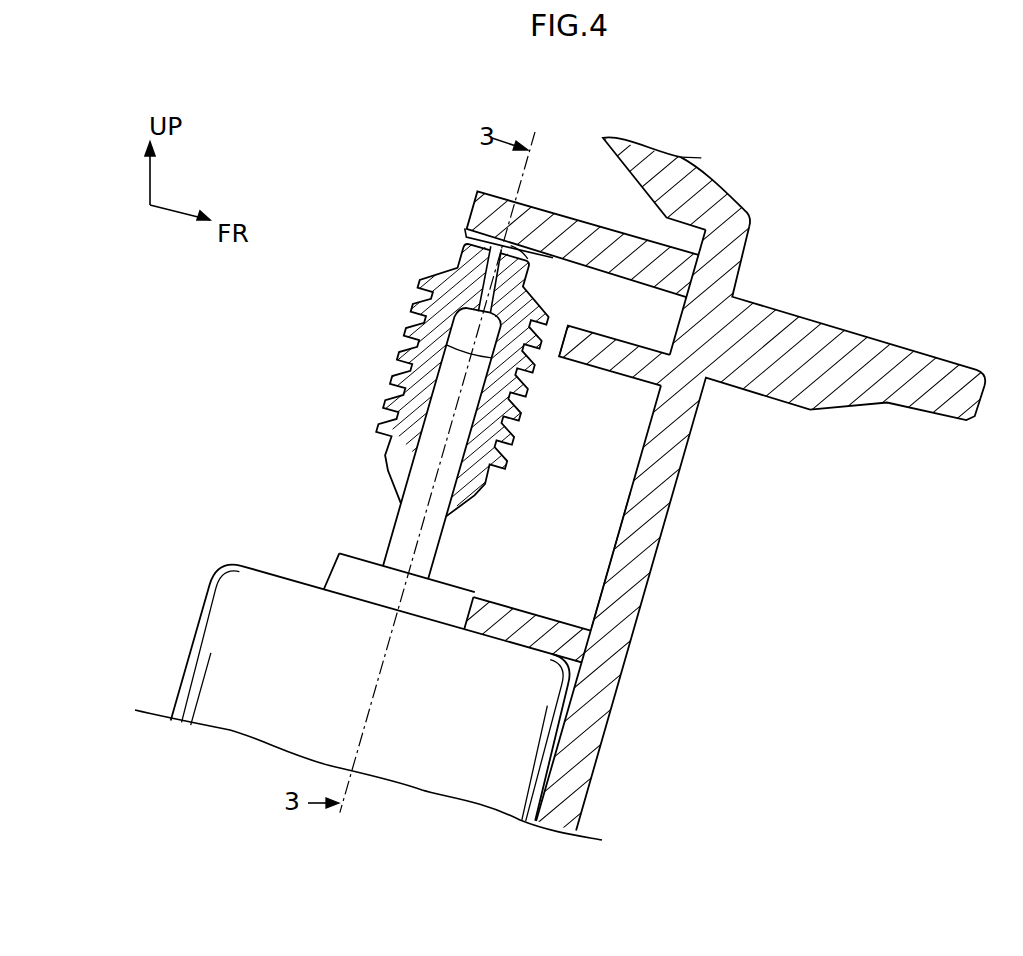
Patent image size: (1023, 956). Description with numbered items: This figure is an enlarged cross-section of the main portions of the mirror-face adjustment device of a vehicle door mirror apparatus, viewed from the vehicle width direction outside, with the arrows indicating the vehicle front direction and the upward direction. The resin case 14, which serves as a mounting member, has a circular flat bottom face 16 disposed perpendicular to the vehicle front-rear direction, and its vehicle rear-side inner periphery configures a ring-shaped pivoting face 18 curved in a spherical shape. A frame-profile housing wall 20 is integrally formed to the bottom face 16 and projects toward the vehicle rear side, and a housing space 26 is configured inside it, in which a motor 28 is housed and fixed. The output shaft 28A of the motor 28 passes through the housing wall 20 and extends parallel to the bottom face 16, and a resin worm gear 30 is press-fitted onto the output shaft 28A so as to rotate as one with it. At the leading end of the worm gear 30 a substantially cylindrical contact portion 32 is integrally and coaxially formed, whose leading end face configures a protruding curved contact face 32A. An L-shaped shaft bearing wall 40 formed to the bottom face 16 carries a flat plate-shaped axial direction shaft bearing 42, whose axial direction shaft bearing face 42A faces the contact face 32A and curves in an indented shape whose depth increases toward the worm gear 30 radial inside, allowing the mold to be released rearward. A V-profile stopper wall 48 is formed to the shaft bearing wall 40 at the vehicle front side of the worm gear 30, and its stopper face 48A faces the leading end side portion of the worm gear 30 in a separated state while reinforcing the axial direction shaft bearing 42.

The case 14 is at (646, 622).
The bottom face 16 is at (612, 568).
The pivoting face 18 is at (605, 140).
The housing wall 20 is at (502, 594).
The housing space 26 is at (592, 653).
The motor 28 is at (368, 667).
The output shaft 28A is at (388, 540).
The worm gear 30 is at (388, 377).
The contact portion 32 is at (459, 387).
The contact face 32A is at (465, 232).
The shaft bearing wall 40 is at (511, 478).
The axial direction shaft bearing 42 is at (480, 195).
The axial direction shaft bearing face 42A is at (526, 260).
The stopper wall 48 is at (634, 346).
The stopper face 48A is at (559, 358).